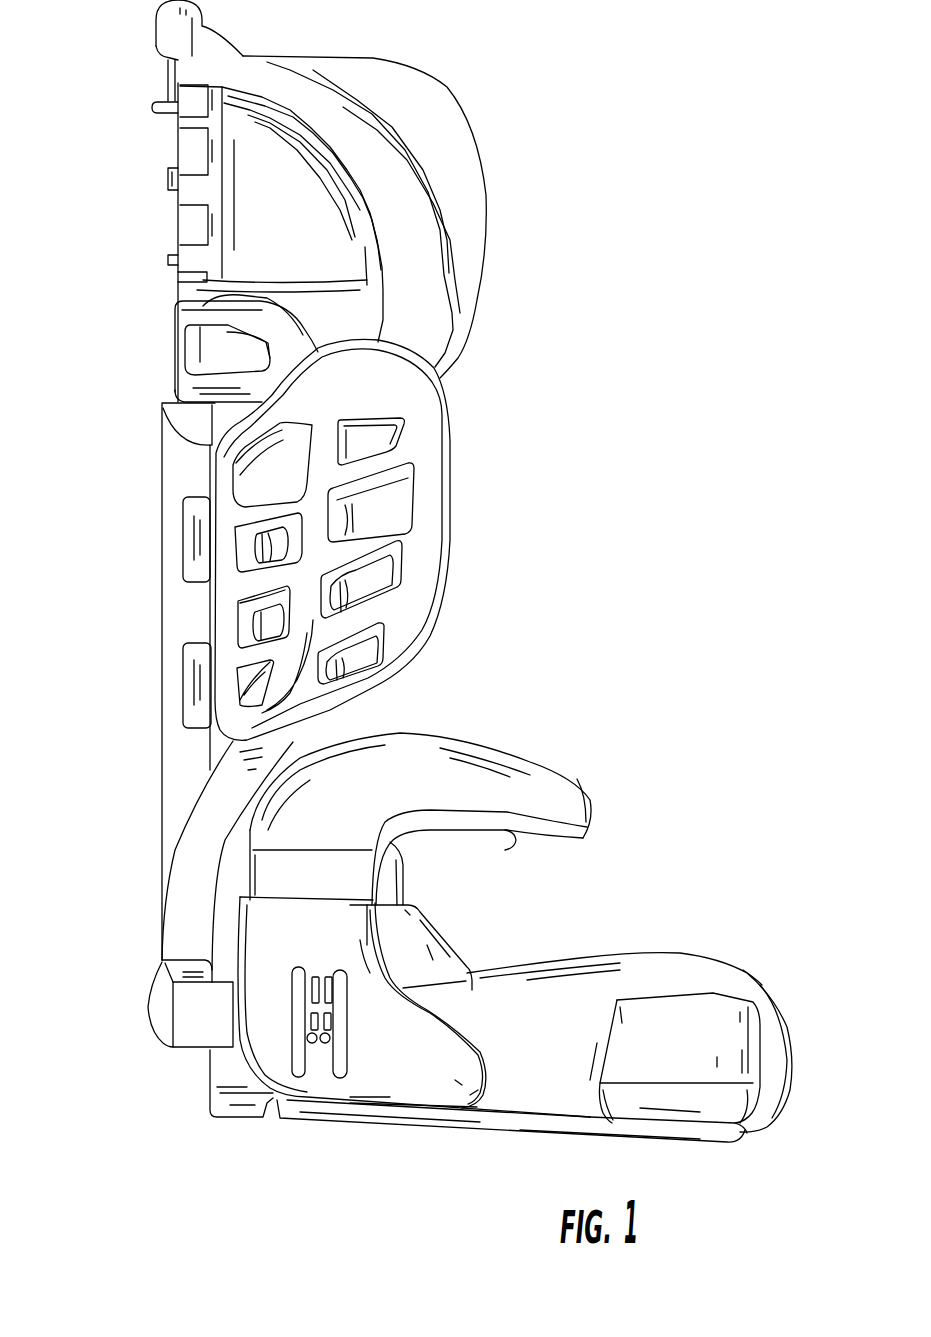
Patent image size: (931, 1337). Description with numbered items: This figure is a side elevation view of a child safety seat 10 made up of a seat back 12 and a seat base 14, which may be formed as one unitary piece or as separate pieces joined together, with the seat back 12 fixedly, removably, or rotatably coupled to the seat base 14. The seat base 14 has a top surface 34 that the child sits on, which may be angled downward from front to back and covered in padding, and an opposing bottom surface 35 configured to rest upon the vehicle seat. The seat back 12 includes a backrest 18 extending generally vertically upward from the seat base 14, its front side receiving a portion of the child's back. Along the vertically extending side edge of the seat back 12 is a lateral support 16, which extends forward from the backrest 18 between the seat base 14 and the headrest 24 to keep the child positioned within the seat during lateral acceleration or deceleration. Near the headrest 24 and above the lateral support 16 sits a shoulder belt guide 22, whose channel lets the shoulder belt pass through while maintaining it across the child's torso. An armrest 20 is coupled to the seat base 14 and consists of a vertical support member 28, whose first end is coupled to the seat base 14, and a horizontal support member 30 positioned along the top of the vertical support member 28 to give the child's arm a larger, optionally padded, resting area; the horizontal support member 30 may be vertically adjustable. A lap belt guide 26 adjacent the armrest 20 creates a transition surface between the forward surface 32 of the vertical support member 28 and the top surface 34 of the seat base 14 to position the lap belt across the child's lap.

The child safety seat 10 is at (548, 121).
The seat back 12 is at (84, 293).
The seat base 14 is at (673, 1159).
The lateral support 16 is at (407, 528).
The backrest 18 is at (160, 543).
The armrest 20 is at (512, 738).
The shoulder belt guide 22 is at (176, 362).
The headrest 24 is at (190, 155).
The lap belt guide 26 is at (430, 943).
The vertical support member 28 is at (270, 874).
The horizontal support member 30 is at (548, 780).
The forward surface 32 is at (403, 872).
The top surface 34 is at (632, 953).
The bottom surface 35 is at (440, 1137).